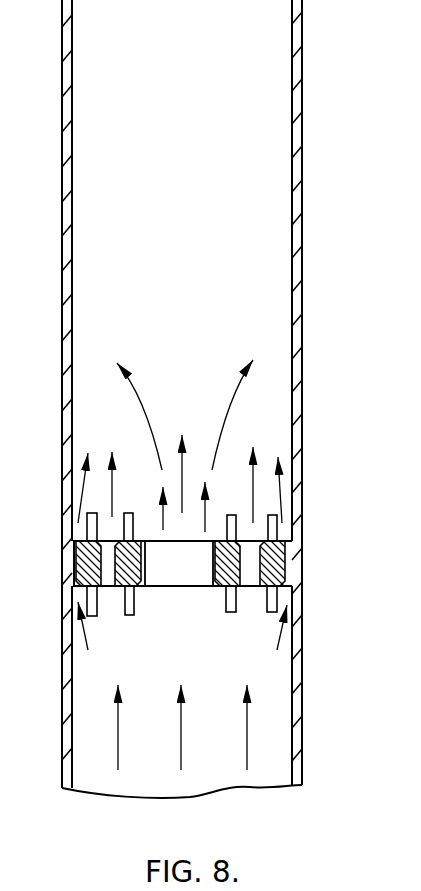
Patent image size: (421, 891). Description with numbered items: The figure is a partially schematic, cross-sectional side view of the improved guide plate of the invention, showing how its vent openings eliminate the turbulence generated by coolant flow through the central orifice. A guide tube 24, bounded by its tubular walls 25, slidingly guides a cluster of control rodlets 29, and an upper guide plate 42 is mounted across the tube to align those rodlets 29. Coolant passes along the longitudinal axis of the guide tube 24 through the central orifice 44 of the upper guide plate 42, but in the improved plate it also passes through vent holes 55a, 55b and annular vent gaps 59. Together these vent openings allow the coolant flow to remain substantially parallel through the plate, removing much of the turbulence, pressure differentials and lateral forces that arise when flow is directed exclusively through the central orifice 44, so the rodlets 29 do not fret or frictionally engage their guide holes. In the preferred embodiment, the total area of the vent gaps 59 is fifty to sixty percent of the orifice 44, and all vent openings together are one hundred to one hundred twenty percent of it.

The guide tube 24 is at (193, 230).
The tubular wall 25 is at (302, 302).
The control rodlet 29 is at (125, 515).
The upper guide plate 42 is at (283, 542).
The central orifice 44 is at (193, 573).
The vent hole 55a is at (112, 562).
The vent hole 55b is at (256, 562).
The annular vent gap 59 is at (78, 558).